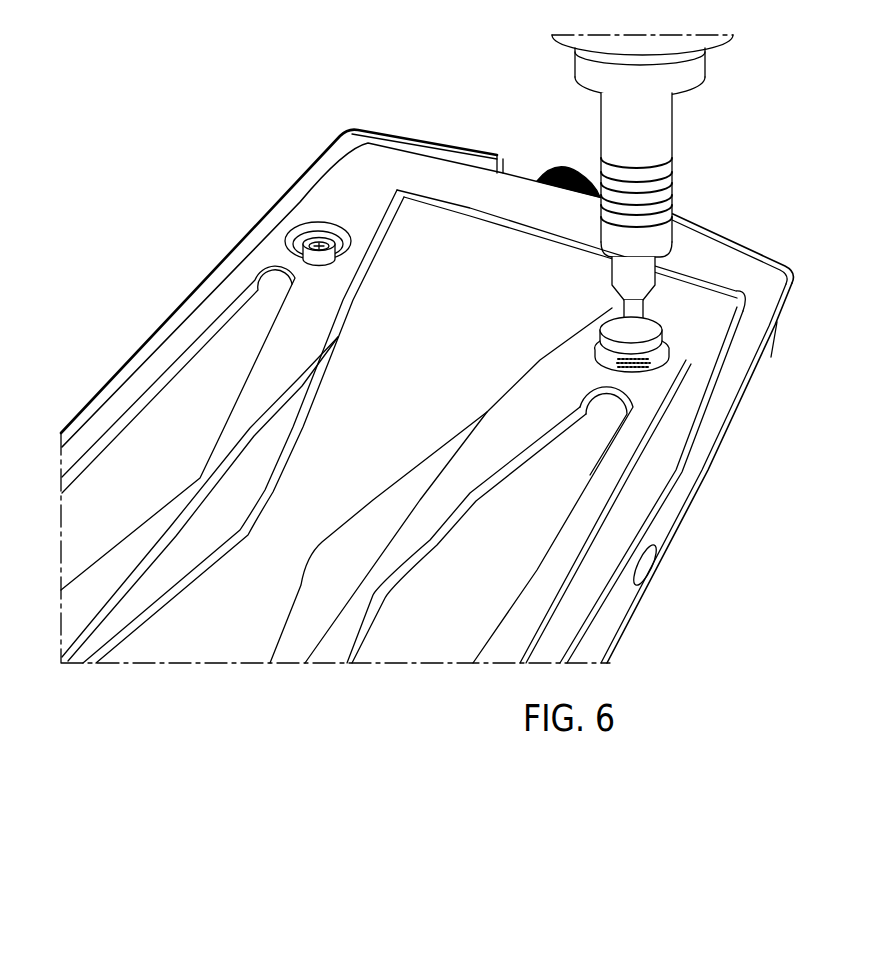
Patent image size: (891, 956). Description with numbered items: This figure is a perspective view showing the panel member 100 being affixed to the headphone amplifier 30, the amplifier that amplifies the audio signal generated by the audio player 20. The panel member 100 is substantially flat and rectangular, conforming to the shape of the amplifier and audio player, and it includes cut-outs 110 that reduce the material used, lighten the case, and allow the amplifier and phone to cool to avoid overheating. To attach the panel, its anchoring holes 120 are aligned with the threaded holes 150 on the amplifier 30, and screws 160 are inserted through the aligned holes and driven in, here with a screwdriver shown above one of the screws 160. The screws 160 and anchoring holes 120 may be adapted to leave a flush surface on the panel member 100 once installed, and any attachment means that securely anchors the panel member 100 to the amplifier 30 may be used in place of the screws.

The panel member 100 is at (458, 178).
The cut-outs 110 is at (203, 385).
The anchoring holes 120 is at (290, 246).
The threaded holes 150 is at (319, 242).
The screws 160 is at (652, 333).
The audio player 20 is at (463, 360).
The headphone amplifier 30 is at (670, 515).